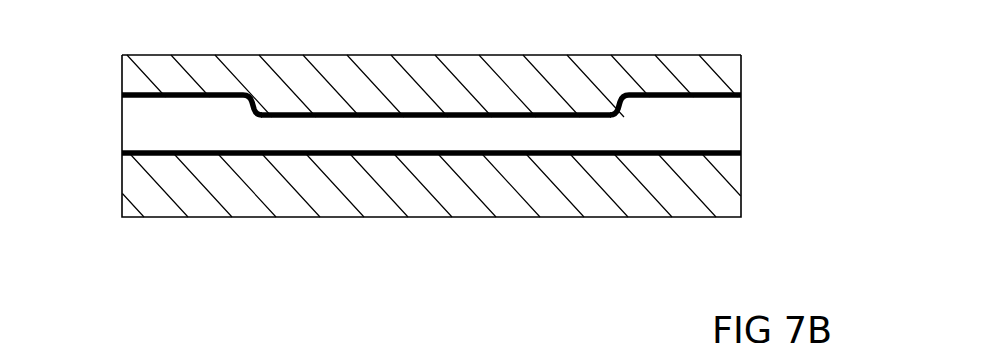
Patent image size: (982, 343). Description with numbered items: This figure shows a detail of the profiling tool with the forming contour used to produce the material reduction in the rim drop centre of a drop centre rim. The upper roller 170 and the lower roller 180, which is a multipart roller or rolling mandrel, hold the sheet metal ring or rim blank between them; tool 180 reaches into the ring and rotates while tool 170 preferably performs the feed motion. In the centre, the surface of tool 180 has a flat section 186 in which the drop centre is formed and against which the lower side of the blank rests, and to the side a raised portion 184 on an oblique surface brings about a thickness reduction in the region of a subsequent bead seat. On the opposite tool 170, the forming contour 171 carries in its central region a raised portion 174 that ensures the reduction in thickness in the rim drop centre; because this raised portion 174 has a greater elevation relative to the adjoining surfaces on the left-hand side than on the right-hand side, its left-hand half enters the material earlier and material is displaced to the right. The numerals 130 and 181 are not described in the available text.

The sensor assembly 130 is at (431, 199).
The upper roller 170 is at (560, 77).
The forming contour 171 is at (717, 92).
The raised portion 174 is at (410, 112).
The lower roller 180 is at (352, 208).
The lower conductive layer 181 is at (172, 152).
The raised portion 184 is at (431, 27).
The flat section 186 is at (470, 155).